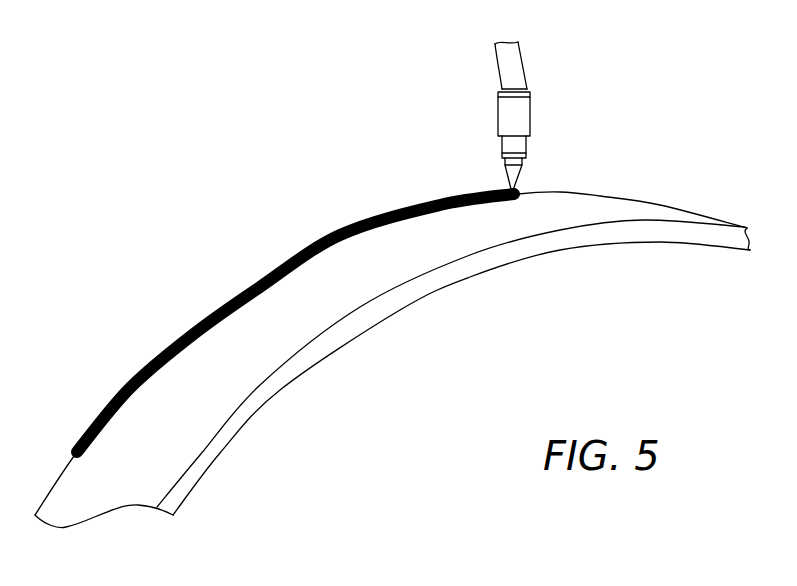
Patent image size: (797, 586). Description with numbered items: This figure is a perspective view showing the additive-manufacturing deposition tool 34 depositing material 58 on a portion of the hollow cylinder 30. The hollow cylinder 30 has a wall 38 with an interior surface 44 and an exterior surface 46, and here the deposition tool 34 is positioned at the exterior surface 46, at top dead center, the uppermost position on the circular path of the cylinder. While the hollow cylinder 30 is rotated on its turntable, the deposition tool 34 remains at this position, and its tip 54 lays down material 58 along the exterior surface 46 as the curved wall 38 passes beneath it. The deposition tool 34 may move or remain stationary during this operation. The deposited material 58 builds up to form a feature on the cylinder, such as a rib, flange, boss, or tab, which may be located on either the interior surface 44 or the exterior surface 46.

The hollow cylinder 30 is at (290, 392).
The additive-manufacturing deposition tool 34 is at (537, 120).
The wall 38 is at (436, 276).
The interior surface 44 is at (337, 348).
The exterior surface 46 is at (369, 302).
The applicator tip 54 is at (517, 182).
The material 58 is at (223, 292).